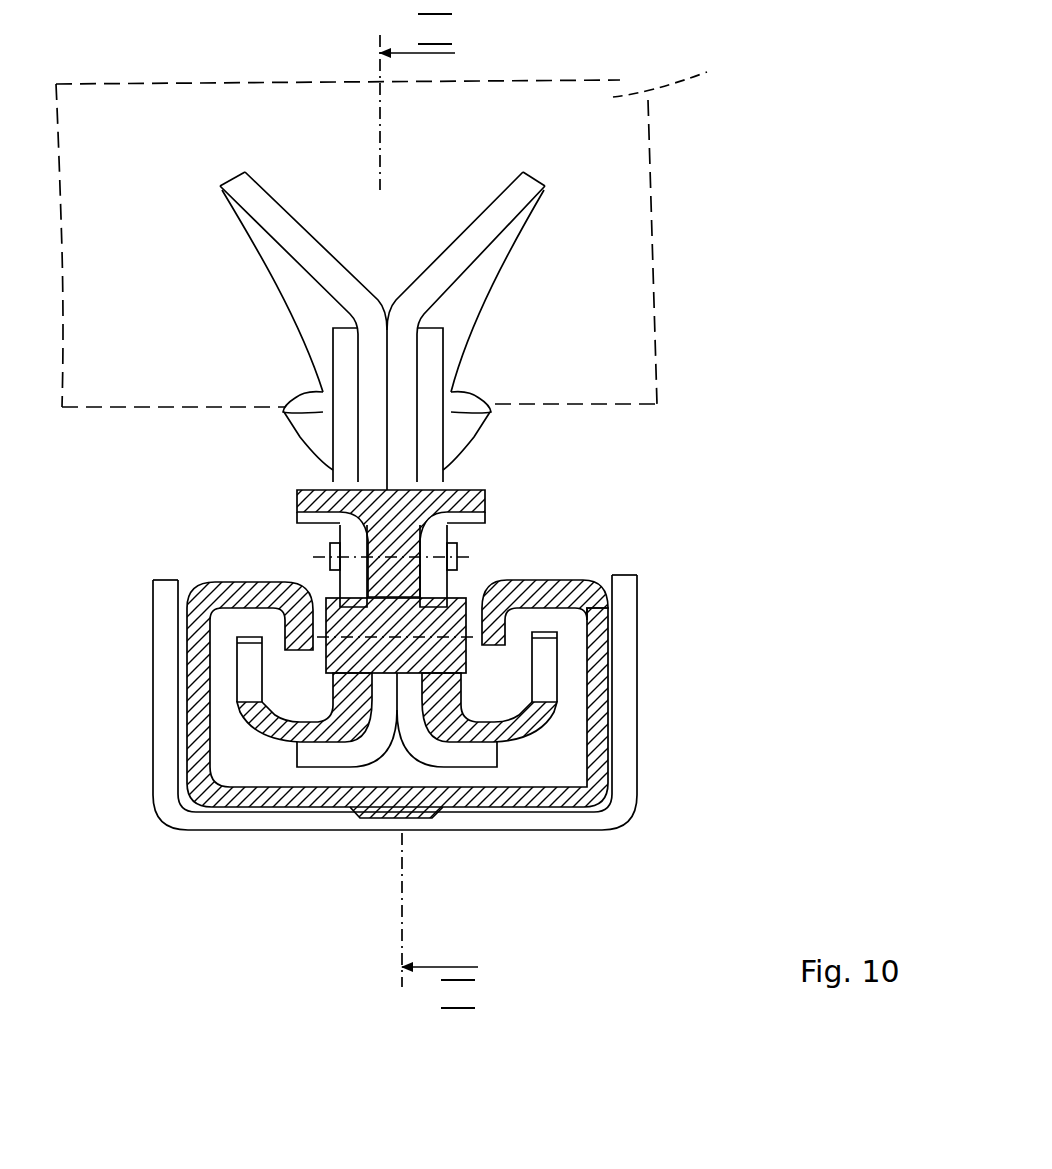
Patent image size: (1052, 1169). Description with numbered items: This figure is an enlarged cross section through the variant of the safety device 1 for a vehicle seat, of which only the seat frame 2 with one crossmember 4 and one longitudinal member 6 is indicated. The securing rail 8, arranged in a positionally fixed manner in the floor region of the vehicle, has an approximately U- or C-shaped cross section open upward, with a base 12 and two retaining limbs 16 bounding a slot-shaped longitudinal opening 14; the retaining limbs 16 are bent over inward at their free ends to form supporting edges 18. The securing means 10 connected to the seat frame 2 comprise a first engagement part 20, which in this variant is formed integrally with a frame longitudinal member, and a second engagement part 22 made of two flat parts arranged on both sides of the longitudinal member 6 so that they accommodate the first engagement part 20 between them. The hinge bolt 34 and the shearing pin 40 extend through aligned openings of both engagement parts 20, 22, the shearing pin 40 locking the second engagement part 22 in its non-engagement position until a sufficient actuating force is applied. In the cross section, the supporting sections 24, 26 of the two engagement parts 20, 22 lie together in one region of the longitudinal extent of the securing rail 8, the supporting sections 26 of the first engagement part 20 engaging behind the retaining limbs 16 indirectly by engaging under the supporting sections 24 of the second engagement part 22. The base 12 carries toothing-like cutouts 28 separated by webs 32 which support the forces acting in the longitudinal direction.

The safety device 1 is at (584, 520).
The seat frame 2 is at (665, 295).
The crossmember 4 is at (671, 77).
The longitudinal member 6 is at (395, 410).
The securing rail 8 is at (592, 788).
The securing means 10 is at (288, 555).
The base 12 is at (540, 808).
The slot-shaped longitudinal opening 14 is at (475, 598).
The retaining limbs 16 is at (600, 727).
The supporting edges 18 is at (600, 590).
The first engagement part 20 is at (407, 541).
The second engagement part 22 is at (444, 581).
The supporting sections 24 is at (250, 667).
The supporting sections 26 is at (350, 800).
The toothing-like cutouts 28 is at (380, 757).
The webs 32 is at (400, 820).
The hinge bolt 34 is at (320, 597).
The shearing pin 40 is at (327, 548).